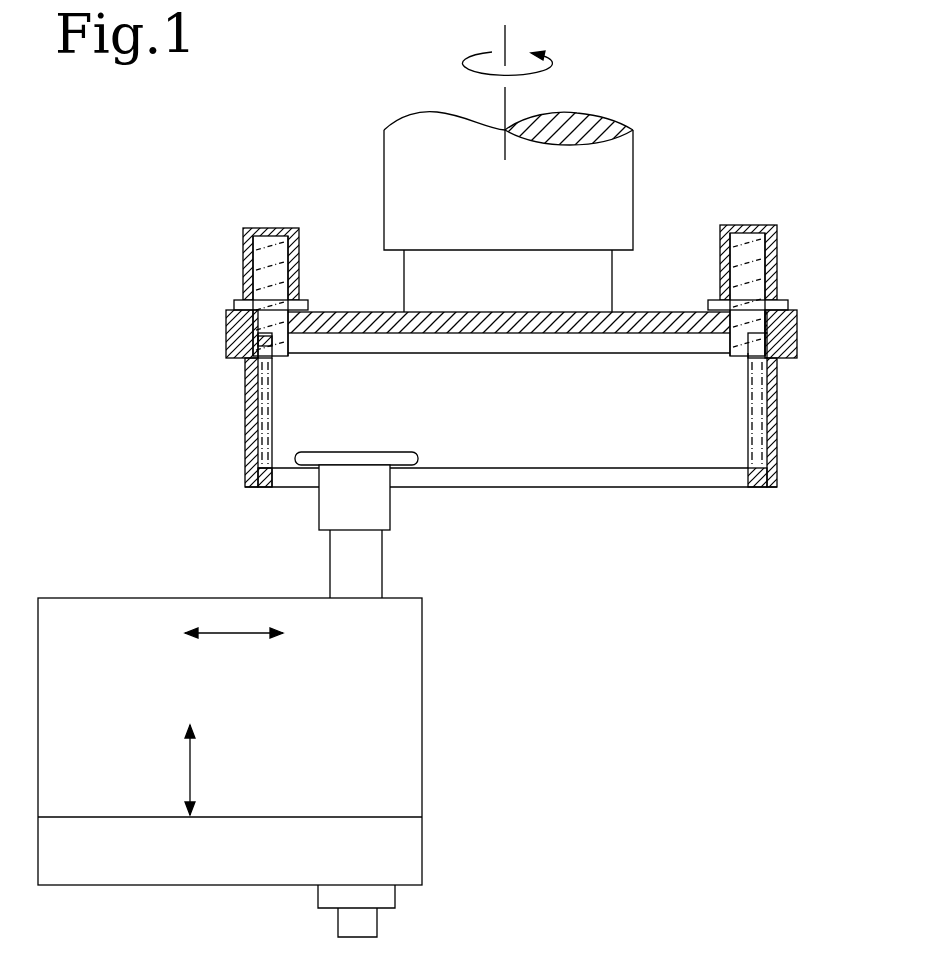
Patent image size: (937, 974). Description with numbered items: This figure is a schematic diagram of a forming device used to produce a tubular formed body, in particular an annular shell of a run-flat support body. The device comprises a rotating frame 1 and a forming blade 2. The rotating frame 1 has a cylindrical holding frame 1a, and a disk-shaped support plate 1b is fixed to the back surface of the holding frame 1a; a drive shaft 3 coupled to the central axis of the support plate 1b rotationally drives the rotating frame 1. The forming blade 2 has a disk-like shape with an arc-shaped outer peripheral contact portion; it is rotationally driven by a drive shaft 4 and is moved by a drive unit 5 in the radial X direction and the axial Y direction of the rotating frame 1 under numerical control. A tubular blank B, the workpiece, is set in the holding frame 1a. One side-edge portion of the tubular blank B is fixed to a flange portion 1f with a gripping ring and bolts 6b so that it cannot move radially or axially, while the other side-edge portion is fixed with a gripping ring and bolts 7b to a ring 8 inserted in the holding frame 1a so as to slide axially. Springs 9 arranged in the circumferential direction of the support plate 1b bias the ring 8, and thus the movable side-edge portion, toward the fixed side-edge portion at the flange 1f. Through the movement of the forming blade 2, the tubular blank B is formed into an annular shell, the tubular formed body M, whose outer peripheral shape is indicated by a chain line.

The rotating frame 1 is at (778, 395).
The cylindrical holding frame 1a is at (770, 440).
The disk-shaped support plate 1b is at (668, 318).
The flange portion 1f is at (272, 487).
The forming blade 2 is at (418, 457).
The drive shaft 3 is at (620, 165).
The drive shaft 4 is at (382, 565).
The drive unit 5 is at (422, 722).
The bolts 6b is at (248, 487).
The bolts 7b is at (258, 335).
The ring 8 is at (258, 372).
The springs 9 is at (262, 258).
The tubular formed body M is at (770, 405).
The tubular blank B is at (745, 445).